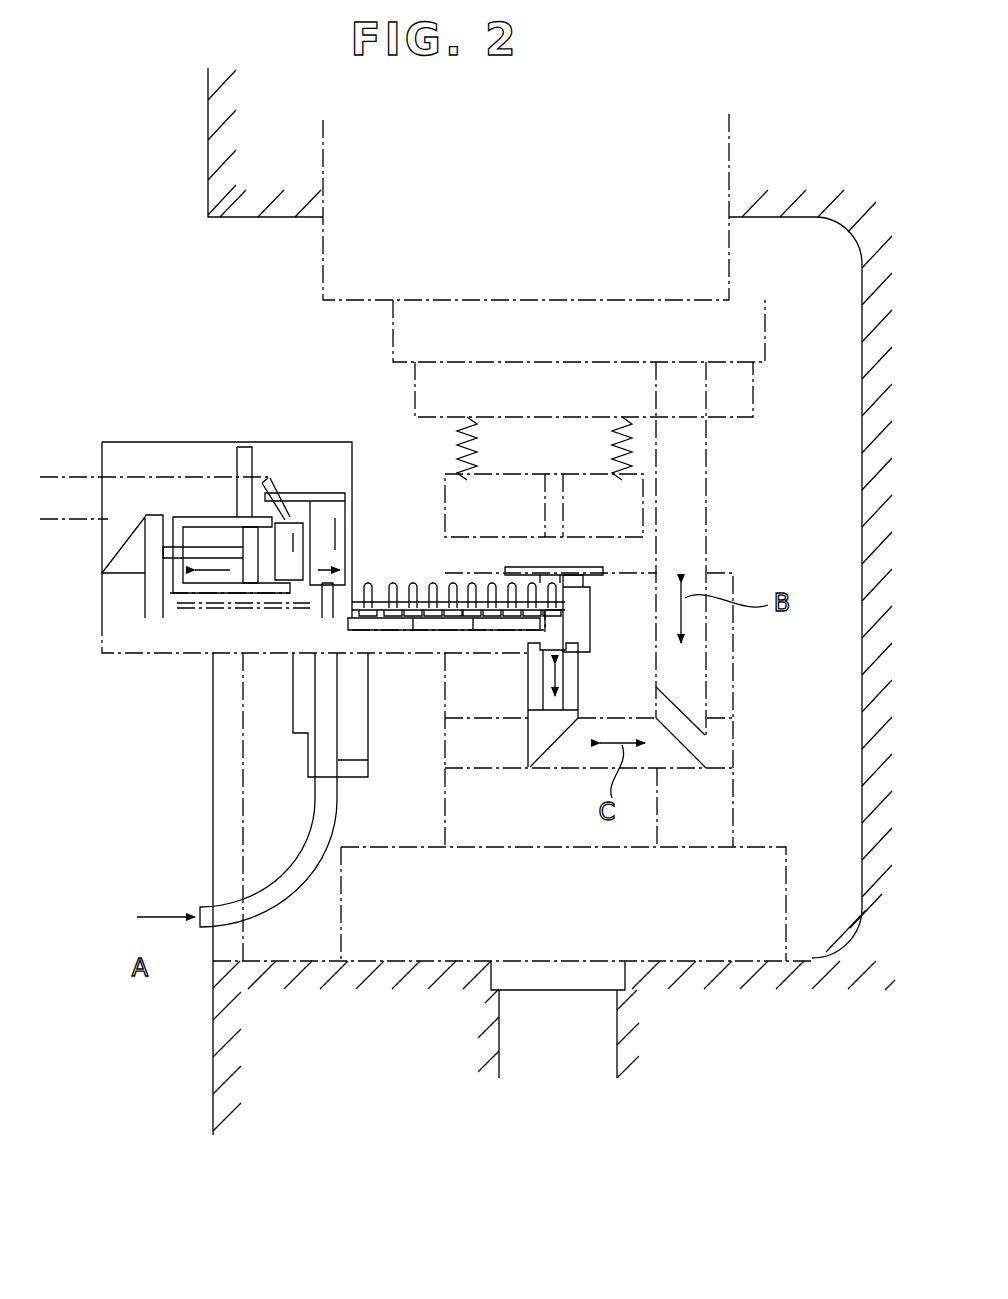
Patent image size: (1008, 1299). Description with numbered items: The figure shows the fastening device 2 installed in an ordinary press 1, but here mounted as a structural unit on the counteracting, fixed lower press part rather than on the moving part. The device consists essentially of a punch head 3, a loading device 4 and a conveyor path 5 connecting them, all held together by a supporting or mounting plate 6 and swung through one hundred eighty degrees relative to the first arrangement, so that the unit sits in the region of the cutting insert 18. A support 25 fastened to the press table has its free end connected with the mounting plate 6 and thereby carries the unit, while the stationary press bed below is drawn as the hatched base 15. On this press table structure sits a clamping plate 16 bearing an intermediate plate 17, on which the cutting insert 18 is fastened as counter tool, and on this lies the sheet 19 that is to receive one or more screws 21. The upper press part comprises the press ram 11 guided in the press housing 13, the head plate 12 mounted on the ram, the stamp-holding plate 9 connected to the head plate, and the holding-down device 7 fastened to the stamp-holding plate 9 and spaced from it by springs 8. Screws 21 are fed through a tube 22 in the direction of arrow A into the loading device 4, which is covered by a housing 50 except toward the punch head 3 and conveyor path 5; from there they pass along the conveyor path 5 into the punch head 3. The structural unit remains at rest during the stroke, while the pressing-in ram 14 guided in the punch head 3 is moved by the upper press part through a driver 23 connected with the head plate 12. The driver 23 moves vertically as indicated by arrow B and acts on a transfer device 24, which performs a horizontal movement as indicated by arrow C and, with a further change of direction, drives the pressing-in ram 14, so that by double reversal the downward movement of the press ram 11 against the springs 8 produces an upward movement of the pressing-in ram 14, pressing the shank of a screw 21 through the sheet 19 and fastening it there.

The press 1 is at (824, 922).
The fastening device 2 is at (192, 690).
The punch head 3 is at (578, 625).
The loading device 4 is at (140, 458).
The conveyor path 5 is at (403, 630).
The supporting or mounting plate 6 is at (110, 640).
The holding-down device 7 is at (478, 510).
The springs 8 is at (457, 453).
The stamp-holding plate 9 is at (730, 395).
The press ram 11 is at (708, 242).
The head plate 12 is at (730, 334).
The press housing 13 is at (245, 150).
The pressing-in ram 14 is at (555, 652).
The base 15 is at (233, 1085).
The clamping plate 16 is at (757, 877).
The intermediate plate 17 is at (447, 803).
The cutting insert 18 is at (720, 648).
The sheet 19 is at (530, 567).
The screws 21 is at (555, 592).
The tube 22 is at (300, 873).
The driver 23 is at (690, 525).
The transfer device 24 is at (643, 757).
The support 25 is at (222, 812).
The housing 50 is at (103, 585).